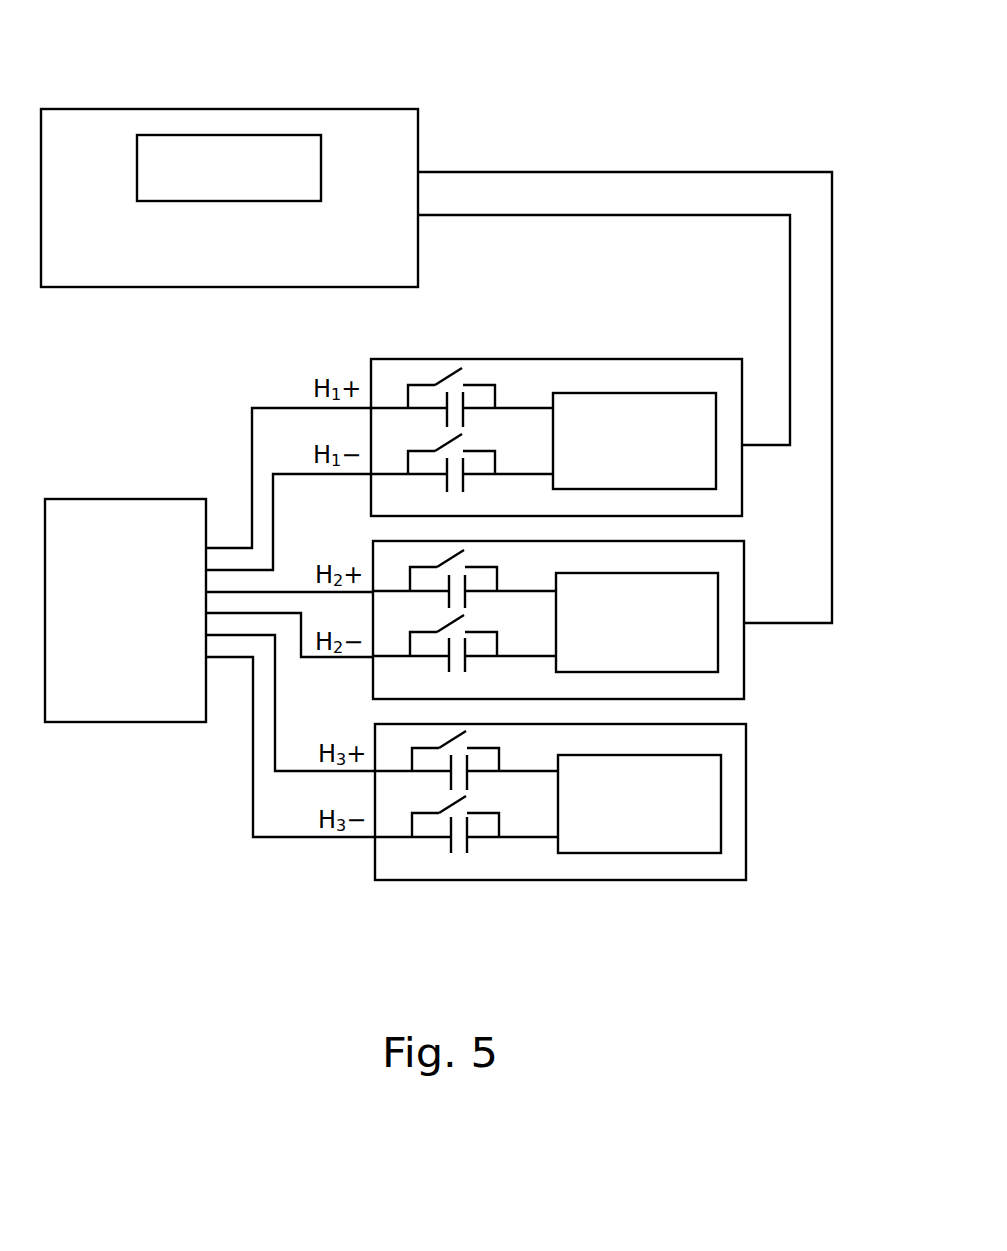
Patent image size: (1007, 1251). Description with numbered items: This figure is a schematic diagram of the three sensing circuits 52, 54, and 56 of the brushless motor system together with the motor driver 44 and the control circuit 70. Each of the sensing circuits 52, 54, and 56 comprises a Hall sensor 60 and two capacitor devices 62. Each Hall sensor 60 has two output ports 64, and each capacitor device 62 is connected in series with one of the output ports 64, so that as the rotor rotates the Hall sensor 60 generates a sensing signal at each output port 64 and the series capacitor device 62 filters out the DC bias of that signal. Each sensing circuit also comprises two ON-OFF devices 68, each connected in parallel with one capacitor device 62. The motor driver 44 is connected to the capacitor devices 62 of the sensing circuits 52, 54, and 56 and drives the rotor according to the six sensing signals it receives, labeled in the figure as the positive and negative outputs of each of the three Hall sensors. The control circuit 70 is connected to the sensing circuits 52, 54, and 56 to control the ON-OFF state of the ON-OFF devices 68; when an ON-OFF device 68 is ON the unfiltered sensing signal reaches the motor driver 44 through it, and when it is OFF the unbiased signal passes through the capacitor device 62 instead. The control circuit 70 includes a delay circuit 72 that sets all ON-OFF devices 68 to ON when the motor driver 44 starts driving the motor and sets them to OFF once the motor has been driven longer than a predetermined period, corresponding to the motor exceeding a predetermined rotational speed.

The control circuit 70 is at (223, 150).
The delay circuit 72 is at (137, 175).
The motor driver 44 is at (120, 499).
The sensing circuit 52 is at (632, 399).
The sensing circuit 54 is at (763, 583).
The sensing circuit 56 is at (763, 764).
The Hall sensor 60 is at (686, 393).
The capacitor device 62 is at (463, 417).
The output port 64 is at (541, 408).
The ON-OFF device 68 is at (452, 375).